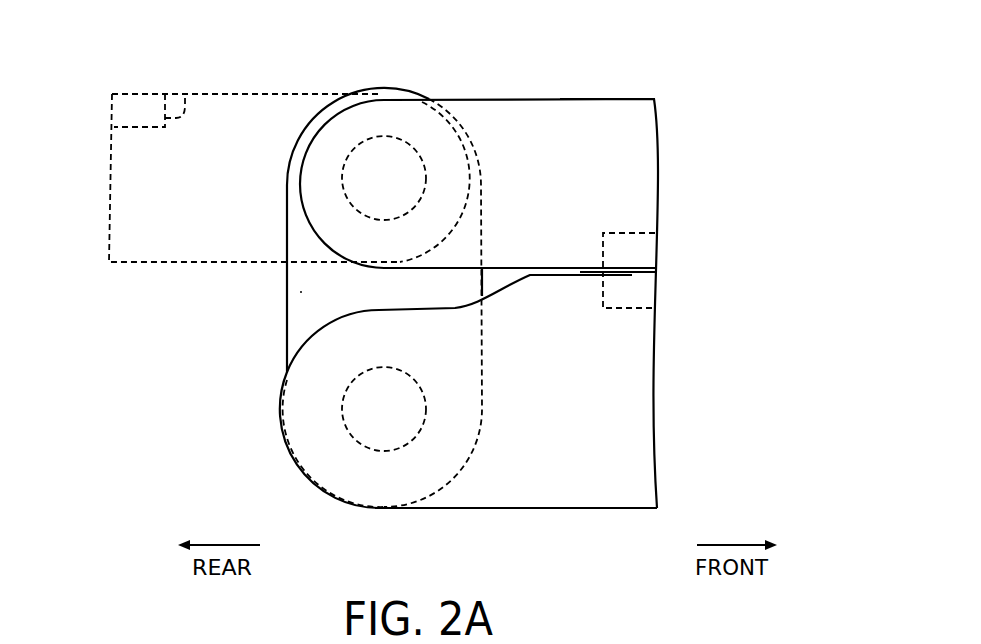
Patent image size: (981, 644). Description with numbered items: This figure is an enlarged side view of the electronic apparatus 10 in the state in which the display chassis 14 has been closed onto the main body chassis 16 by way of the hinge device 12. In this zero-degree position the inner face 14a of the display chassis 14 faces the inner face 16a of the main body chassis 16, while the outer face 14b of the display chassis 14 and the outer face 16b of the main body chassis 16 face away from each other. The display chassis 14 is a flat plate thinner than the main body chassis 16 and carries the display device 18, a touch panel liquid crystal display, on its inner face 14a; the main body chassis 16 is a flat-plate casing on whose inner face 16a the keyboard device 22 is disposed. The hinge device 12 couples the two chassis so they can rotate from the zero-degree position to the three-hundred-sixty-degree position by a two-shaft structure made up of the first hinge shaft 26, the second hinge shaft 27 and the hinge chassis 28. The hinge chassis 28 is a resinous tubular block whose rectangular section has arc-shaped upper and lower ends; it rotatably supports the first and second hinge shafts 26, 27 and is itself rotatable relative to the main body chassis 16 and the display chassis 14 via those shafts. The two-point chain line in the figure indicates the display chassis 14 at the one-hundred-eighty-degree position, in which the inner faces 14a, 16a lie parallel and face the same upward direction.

The electronic apparatus 10 is at (69, 65).
The hinge device 12 is at (258, 323).
The display chassis 14 is at (262, 83).
The inner face of display chassis 14a is at (632, 276).
The outer face of display chassis 14b is at (629, 99).
The main body chassis 16 is at (545, 520).
The inner face of main body chassis 16a is at (583, 268).
The outer face of main body chassis 16b is at (596, 509).
The display device 18 is at (183, 92).
The keyboard device 22 is at (630, 308).
The first hinge shaft 26 is at (373, 452).
The second hinge shaft 27 is at (389, 136).
The hinge chassis 28 is at (302, 292).